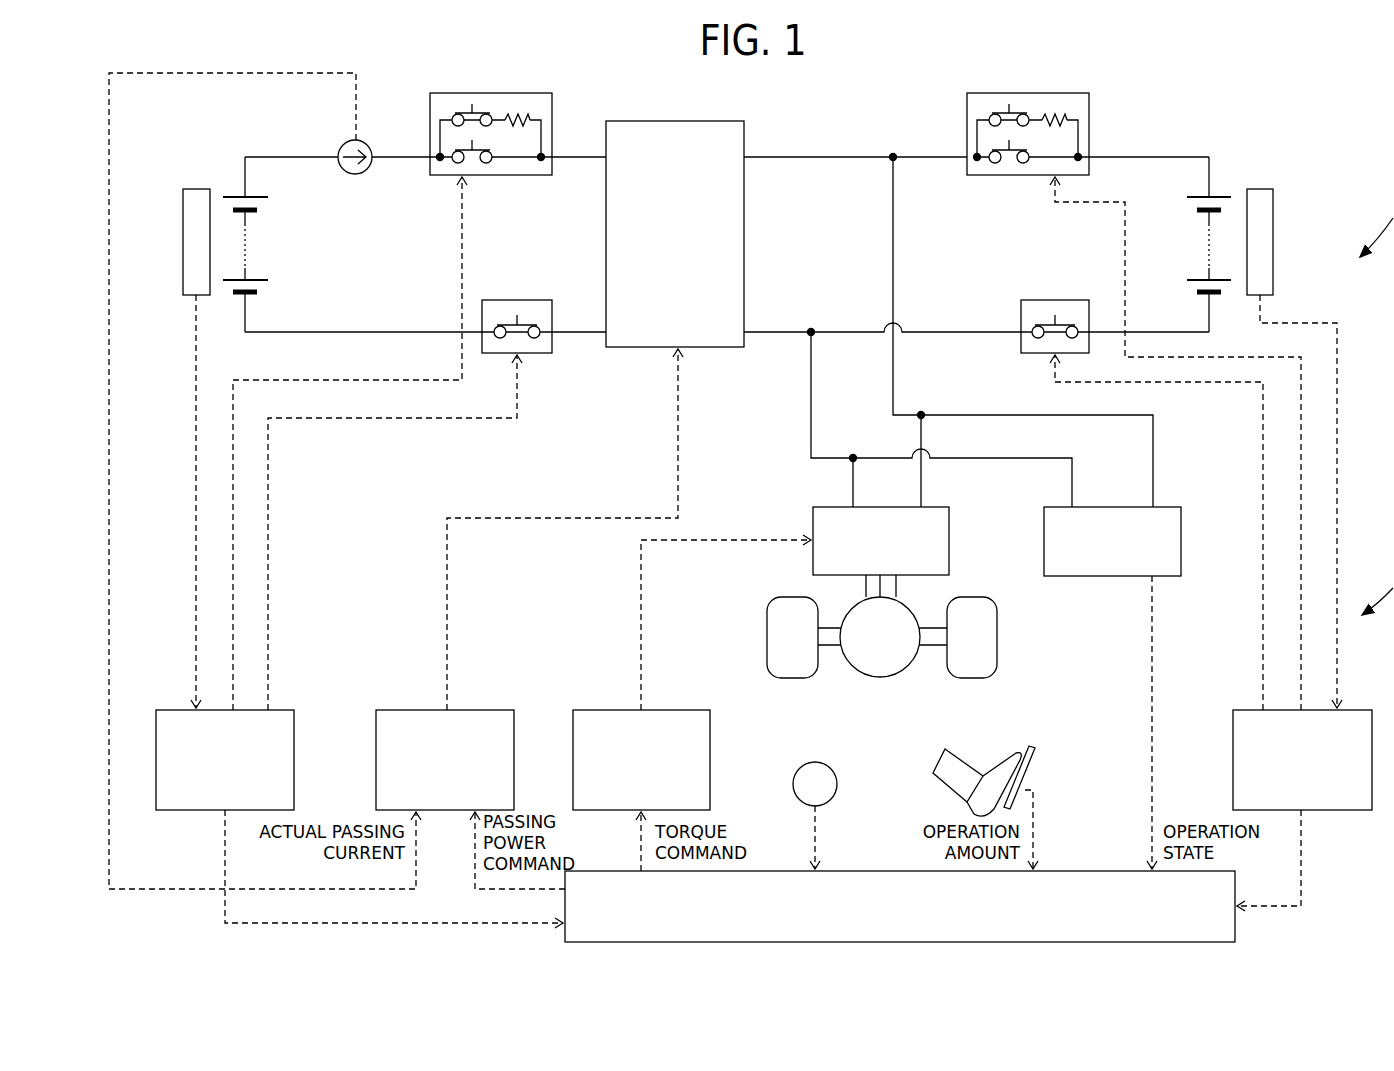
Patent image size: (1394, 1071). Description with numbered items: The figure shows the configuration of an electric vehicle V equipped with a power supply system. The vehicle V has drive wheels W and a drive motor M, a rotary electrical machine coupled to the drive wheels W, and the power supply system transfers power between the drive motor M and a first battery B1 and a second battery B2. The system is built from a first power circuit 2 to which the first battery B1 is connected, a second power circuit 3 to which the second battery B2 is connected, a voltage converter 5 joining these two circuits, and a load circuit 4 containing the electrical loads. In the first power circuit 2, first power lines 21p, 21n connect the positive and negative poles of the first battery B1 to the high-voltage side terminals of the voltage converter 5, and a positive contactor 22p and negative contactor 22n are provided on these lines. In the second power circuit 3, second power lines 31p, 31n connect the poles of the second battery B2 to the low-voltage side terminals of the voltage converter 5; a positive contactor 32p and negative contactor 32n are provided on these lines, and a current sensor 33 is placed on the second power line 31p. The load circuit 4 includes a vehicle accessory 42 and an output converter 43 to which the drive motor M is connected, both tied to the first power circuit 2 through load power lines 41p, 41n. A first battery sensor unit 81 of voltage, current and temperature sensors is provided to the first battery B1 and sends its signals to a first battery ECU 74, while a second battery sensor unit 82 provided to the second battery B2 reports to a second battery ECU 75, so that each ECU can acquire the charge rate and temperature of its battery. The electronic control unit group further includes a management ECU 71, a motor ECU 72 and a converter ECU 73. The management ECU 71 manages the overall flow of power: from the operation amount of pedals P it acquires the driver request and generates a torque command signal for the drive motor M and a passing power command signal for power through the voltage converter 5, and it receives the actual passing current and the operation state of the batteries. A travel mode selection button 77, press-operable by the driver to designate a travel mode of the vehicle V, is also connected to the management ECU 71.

The electric vehicle V is at (1316, 116).
The first power circuit 2 is at (1218, 122).
The second power circuit 3 is at (177, 145).
The load circuit 4 is at (786, 446).
The voltage converter 5 is at (724, 123).
The first power line 21p is at (791, 157).
The first power line 21n is at (776, 331).
The positive contactor 22p is at (1089, 118).
The negative contactor 22n is at (1042, 300).
The second power line 31p is at (291, 157).
The second power line 31n is at (300, 332).
The positive contactor 32p is at (552, 100).
The negative contactor 32n is at (538, 300).
The current sensor 33 is at (366, 140).
The load power line 41p is at (981, 415).
The load power line 41n is at (985, 458).
The vehicle accessory 42 is at (1172, 507).
The output converter 43 is at (822, 510).
The management ECU 71 is at (1105, 871).
The motor ECU 72 is at (591, 712).
The converter ECU 73 is at (486, 712).
The first battery ECU 74 is at (1346, 712).
The second battery ECU 75 is at (283, 712).
The travel mode selection button 77 is at (828, 764).
The first battery sensor unit 81 is at (1272, 189).
The second battery sensor unit 82 is at (205, 189).
The first battery B1 is at (1222, 195).
The second battery B2 is at (268, 210).
The drive motor M is at (893, 670).
The drive wheels W is at (976, 596).
The pedals P is at (1032, 745).